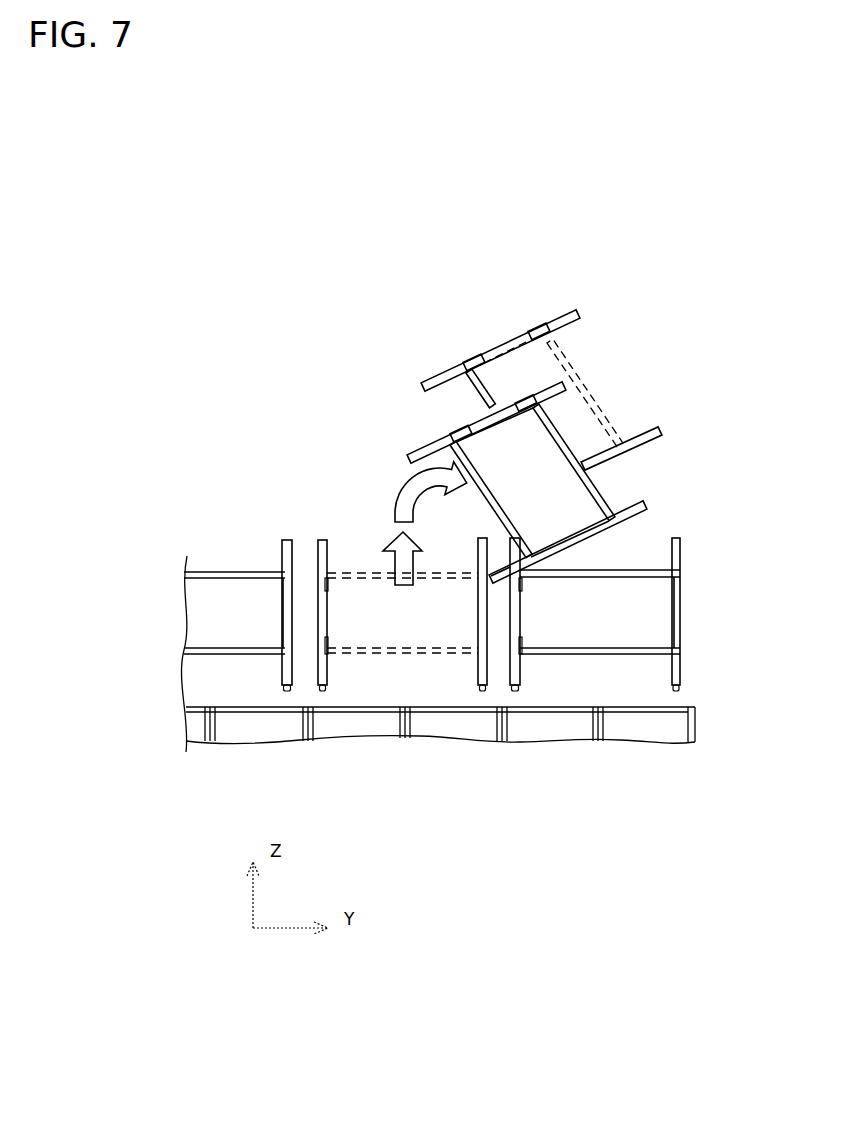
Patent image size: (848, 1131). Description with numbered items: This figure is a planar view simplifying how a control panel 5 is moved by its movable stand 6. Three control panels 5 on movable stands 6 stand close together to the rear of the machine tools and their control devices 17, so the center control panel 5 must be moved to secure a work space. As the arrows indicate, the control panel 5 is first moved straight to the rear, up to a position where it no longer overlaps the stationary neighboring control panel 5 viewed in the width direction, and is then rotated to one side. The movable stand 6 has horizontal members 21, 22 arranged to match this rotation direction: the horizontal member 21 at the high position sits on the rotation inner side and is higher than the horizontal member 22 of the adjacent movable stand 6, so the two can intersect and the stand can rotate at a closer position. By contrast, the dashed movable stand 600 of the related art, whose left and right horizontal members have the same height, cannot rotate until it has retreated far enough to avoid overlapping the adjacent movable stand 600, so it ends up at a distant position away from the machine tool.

The control panel 5 is at (210, 585).
The movable stand 6 is at (287, 541).
The control device 17 is at (457, 730).
The horizontal member 21 is at (512, 567).
The horizontal member 22 is at (515, 548).
The movable stand of the related art 600 is at (635, 443).